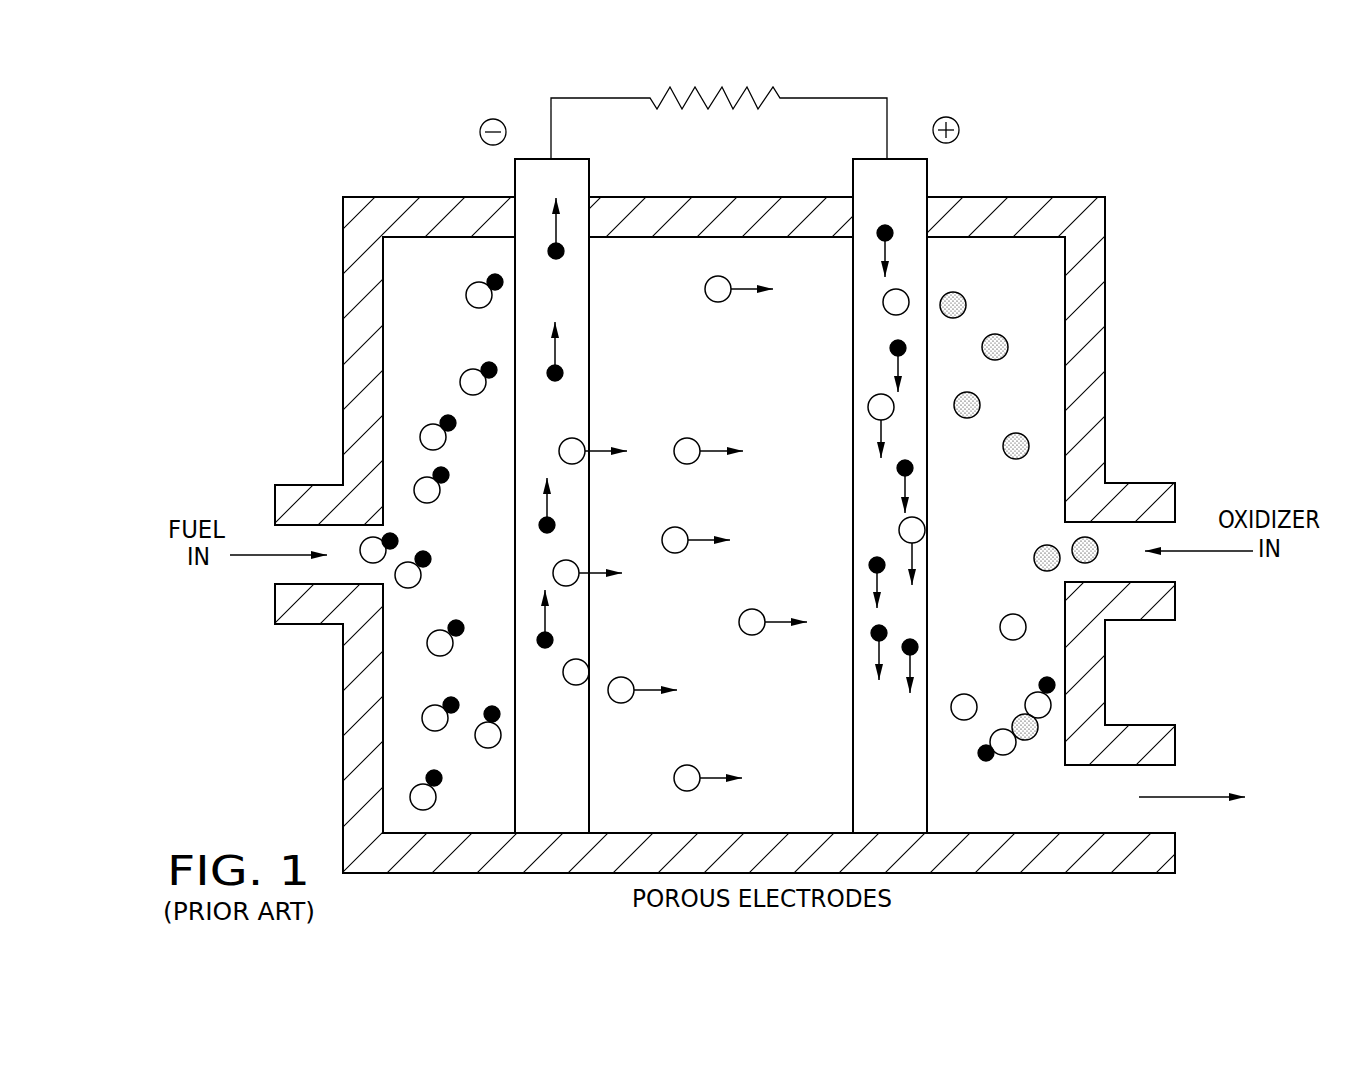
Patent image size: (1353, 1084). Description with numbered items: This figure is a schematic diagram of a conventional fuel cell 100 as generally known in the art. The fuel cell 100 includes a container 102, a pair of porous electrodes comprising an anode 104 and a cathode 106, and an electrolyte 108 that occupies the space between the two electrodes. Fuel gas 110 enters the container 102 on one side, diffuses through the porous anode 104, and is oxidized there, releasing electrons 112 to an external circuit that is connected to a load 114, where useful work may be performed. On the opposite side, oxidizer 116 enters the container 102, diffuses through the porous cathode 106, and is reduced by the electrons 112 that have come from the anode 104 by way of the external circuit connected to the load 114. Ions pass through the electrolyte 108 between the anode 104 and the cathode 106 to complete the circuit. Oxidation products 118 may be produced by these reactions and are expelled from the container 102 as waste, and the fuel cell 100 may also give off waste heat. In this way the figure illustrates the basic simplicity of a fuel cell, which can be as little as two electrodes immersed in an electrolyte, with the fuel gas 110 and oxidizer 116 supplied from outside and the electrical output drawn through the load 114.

The fuel cell 100 is at (1055, 130).
The container 102 is at (1104, 265).
The anode 104 is at (562, 787).
The cathode 106 is at (885, 794).
The electrolyte 108 is at (678, 258).
The fuel gas 110 is at (433, 675).
The electrons 112 is at (563, 253).
The load 114 is at (733, 103).
The oxidizer 116 is at (1026, 367).
The oxidation products 118 is at (1197, 797).